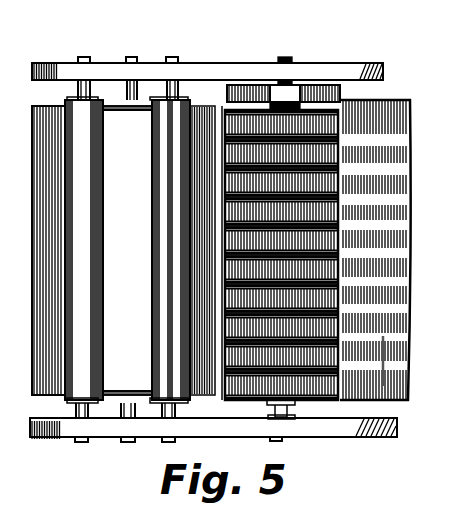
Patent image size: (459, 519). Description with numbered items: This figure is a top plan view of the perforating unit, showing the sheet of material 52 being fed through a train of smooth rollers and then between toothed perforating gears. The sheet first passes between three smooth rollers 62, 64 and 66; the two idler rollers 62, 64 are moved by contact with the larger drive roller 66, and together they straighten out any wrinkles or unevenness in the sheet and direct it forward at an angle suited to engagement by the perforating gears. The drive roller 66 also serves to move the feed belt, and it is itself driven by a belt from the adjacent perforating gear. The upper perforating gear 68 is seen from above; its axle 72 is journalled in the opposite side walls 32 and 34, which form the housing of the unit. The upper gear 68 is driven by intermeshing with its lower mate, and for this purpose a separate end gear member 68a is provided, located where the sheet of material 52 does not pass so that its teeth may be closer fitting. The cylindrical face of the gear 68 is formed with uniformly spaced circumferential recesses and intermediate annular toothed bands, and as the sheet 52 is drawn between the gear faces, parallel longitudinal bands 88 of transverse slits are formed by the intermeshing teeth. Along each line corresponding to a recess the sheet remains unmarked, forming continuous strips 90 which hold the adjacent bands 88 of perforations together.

The side wall 32 is at (352, 73).
The side wall 34 is at (384, 438).
The sheet of material 52 is at (45, 115).
The idler roller 62 is at (92, 108).
The idler roller 64 is at (181, 105).
The drive roller 66 is at (118, 403).
The perforating gear 68 is at (335, 122).
The end gear member 68a is at (243, 92).
The axle 72 is at (287, 60).
The longitudinal band of transverse slits 88 is at (397, 385).
The continuous strip 90 is at (402, 367).